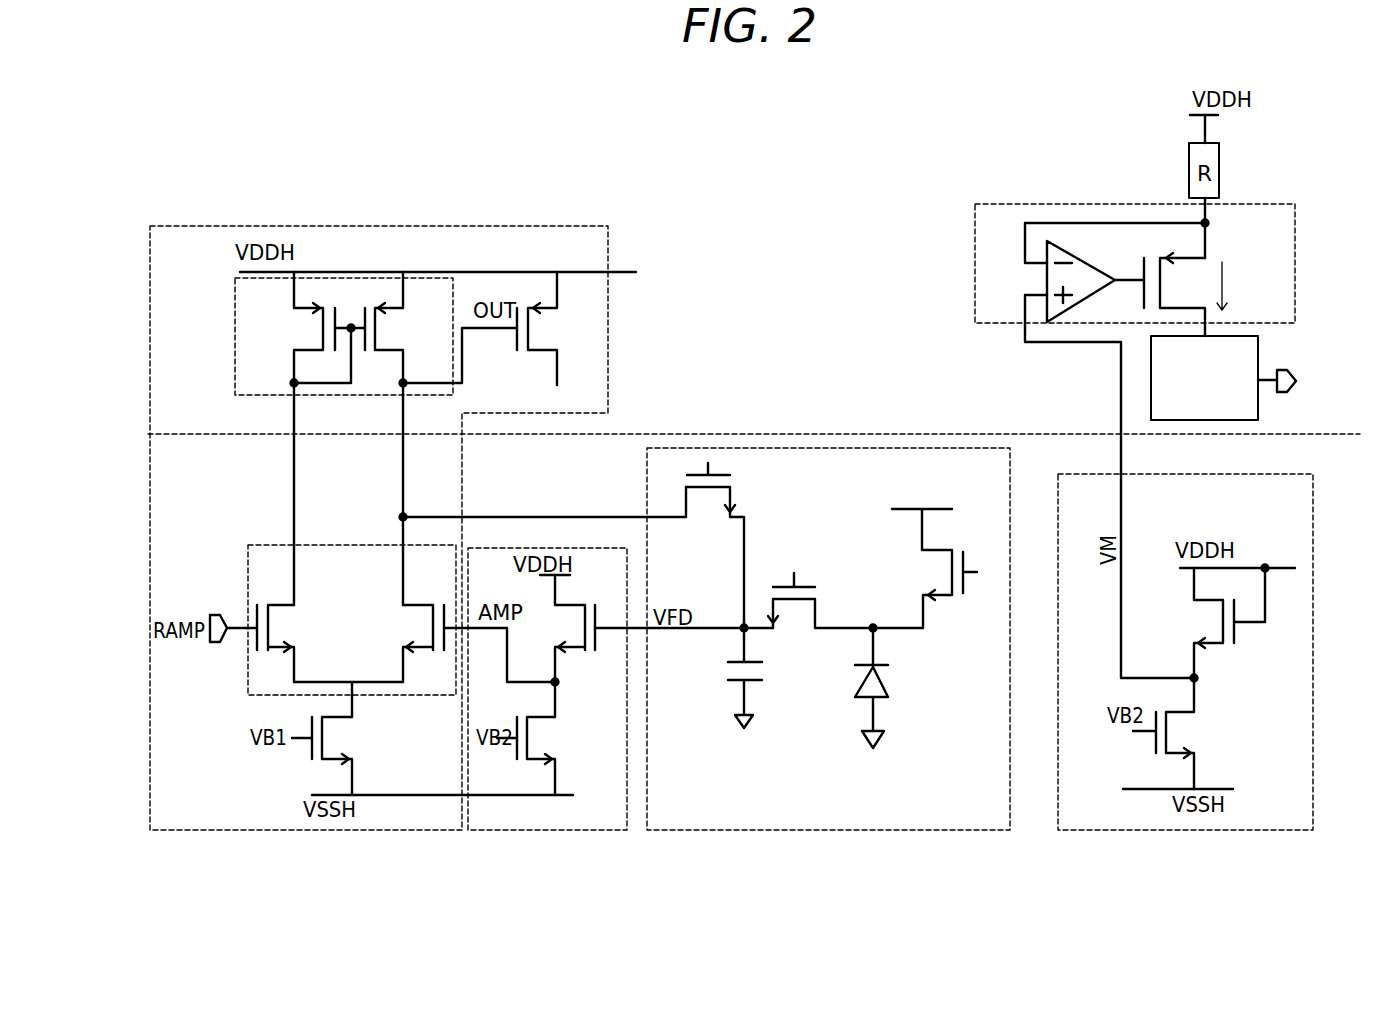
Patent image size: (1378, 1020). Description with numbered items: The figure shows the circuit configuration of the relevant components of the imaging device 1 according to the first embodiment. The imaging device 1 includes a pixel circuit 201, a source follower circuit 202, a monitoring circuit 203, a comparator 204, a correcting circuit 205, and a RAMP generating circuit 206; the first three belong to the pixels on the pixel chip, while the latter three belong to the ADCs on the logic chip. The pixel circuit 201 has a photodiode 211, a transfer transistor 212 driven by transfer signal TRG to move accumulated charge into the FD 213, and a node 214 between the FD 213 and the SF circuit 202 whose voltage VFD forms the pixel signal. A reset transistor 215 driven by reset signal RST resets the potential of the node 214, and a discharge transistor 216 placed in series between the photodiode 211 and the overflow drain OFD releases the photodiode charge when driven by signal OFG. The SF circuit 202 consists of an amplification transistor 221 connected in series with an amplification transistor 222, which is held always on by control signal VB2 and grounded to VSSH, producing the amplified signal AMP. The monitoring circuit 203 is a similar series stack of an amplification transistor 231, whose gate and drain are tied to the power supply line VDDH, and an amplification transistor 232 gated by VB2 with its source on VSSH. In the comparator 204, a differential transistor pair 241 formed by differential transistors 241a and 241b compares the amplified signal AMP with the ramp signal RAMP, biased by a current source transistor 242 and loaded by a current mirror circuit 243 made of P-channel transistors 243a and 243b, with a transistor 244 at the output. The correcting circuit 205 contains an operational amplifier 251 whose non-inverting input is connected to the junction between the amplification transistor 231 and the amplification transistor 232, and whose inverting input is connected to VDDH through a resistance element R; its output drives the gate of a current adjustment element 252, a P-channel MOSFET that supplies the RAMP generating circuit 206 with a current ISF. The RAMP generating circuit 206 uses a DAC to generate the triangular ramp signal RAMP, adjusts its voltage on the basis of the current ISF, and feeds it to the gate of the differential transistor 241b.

The imaging device 1 is at (763, 170).
The pixel circuit 201 is at (820, 832).
The source follower (SF) circuit 202 is at (569, 830).
The monitoring circuit 203 is at (1152, 832).
The comparator 204 is at (293, 830).
The correcting circuit 205 is at (975, 268).
The RAMP generating circuit 206 is at (1258, 357).
The photodiode 211 is at (887, 683).
The transfer transistor 212 is at (792, 626).
The FD 213 is at (733, 683).
The node 214 is at (743, 624).
The reset transistor 215 is at (702, 517).
The discharge transistor 216 is at (921, 565).
The amplification transistor 221 is at (558, 625).
The amplification transistor 222 is at (562, 738).
The amplification transistor 231 is at (1201, 622).
The amplification transistor 232 is at (1198, 738).
The differential transistor pair 241 is at (266, 545).
The differential transistor 241a is at (403, 617).
The differential transistor 241b is at (312, 617).
The current source transistor 242 is at (362, 734).
The current mirror circuit 243 is at (235, 335).
The transistor 243a is at (406, 333).
The transistor 243b is at (296, 330).
The transistor 244 is at (566, 333).
The operational amplifier 251 is at (1073, 256).
The current adjustment element 252 is at (1247, 261).